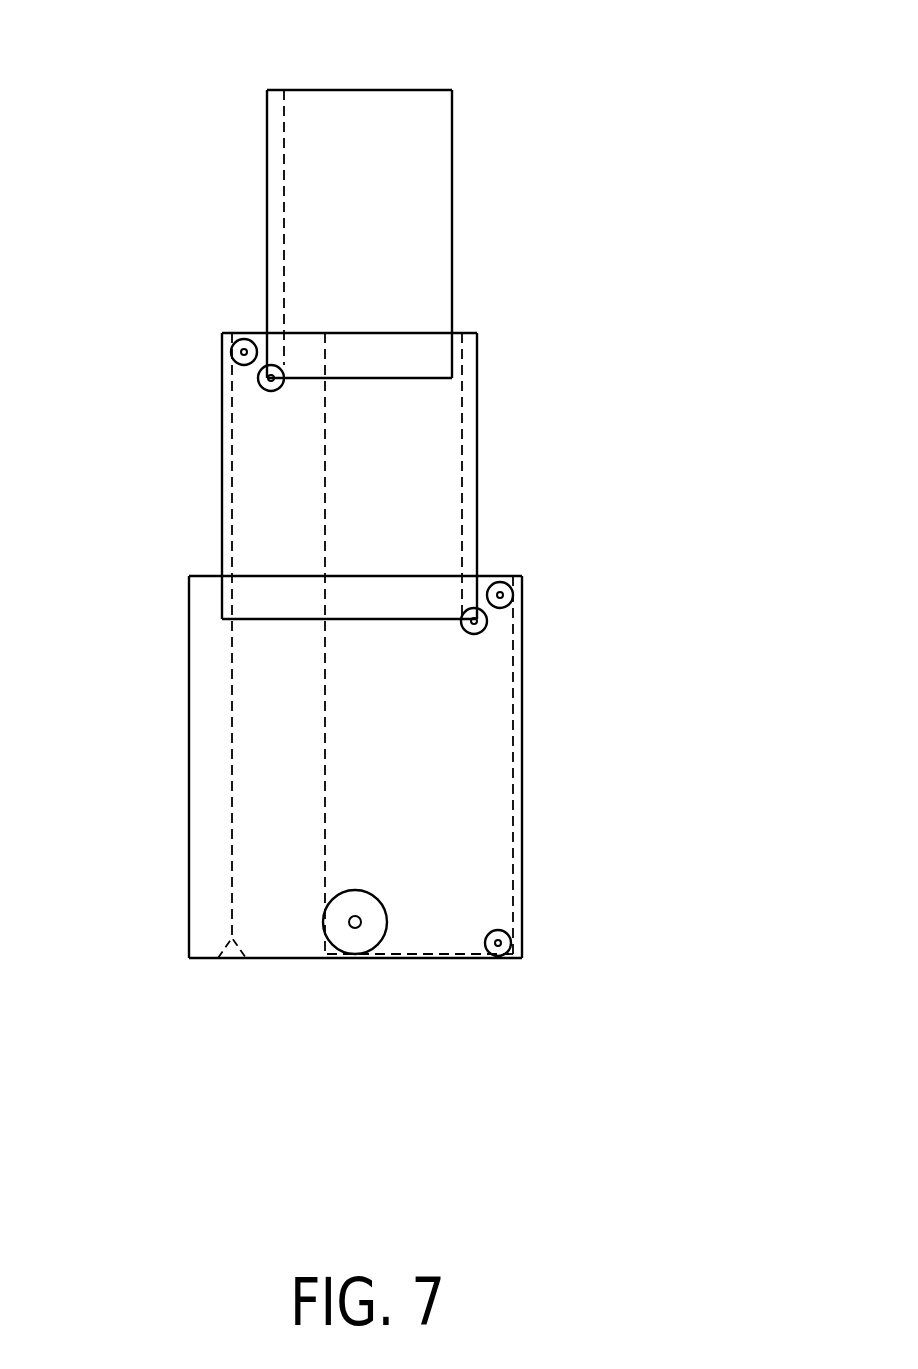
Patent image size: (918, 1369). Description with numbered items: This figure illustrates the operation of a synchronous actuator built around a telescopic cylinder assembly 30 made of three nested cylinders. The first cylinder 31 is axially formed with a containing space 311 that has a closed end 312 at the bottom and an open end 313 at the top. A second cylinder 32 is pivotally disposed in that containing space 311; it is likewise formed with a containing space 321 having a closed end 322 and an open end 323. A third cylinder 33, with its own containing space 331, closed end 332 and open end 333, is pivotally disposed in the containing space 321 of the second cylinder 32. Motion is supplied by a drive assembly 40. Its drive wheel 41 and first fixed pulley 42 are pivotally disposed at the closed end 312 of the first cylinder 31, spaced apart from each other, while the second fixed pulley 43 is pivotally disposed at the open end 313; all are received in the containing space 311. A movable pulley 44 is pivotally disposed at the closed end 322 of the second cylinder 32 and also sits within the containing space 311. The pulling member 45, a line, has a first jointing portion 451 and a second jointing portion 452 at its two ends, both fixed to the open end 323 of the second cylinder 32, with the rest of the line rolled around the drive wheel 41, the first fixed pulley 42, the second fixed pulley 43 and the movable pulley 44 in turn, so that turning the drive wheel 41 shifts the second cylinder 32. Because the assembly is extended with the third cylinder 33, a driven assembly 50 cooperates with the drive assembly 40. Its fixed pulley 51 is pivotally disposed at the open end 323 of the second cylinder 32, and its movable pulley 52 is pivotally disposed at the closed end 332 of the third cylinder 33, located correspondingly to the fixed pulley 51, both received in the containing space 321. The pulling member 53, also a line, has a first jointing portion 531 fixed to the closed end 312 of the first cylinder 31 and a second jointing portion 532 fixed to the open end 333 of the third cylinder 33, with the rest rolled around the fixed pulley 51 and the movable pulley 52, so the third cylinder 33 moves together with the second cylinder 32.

The telescopic cylinder assembly 30 is at (218, 158).
The first cylinder 31 is at (522, 893).
The containing space 311 is at (472, 755).
The closed end 312 is at (295, 960).
The open end 313 is at (253, 572).
The second cylinder 32 is at (478, 525).
The containing space 321 is at (413, 513).
The closed end 322 is at (388, 622).
The open end 323 is at (429, 331).
The third cylinder 33 is at (453, 205).
The containing space 331 is at (408, 197).
The closed end 332 is at (425, 380).
The open end 333 is at (400, 90).
The drive assembly 40 is at (428, 917).
The drive wheel 41 is at (352, 943).
The first fixed pulley 42 is at (487, 950).
The second fixed pulley 43 is at (500, 594).
The movable pulley 44 is at (468, 633).
The pulling member 45 is at (513, 767).
The first jointing portion 451 is at (330, 331).
The second jointing portion 452 is at (457, 331).
The driven assembly 50 is at (228, 372).
The fixed pulley 51 is at (238, 343).
The movable pulley 52 is at (275, 389).
The pulling member 53 is at (232, 683).
The first jointing portion 531 is at (225, 960).
The second jointing portion 532 is at (284, 95).